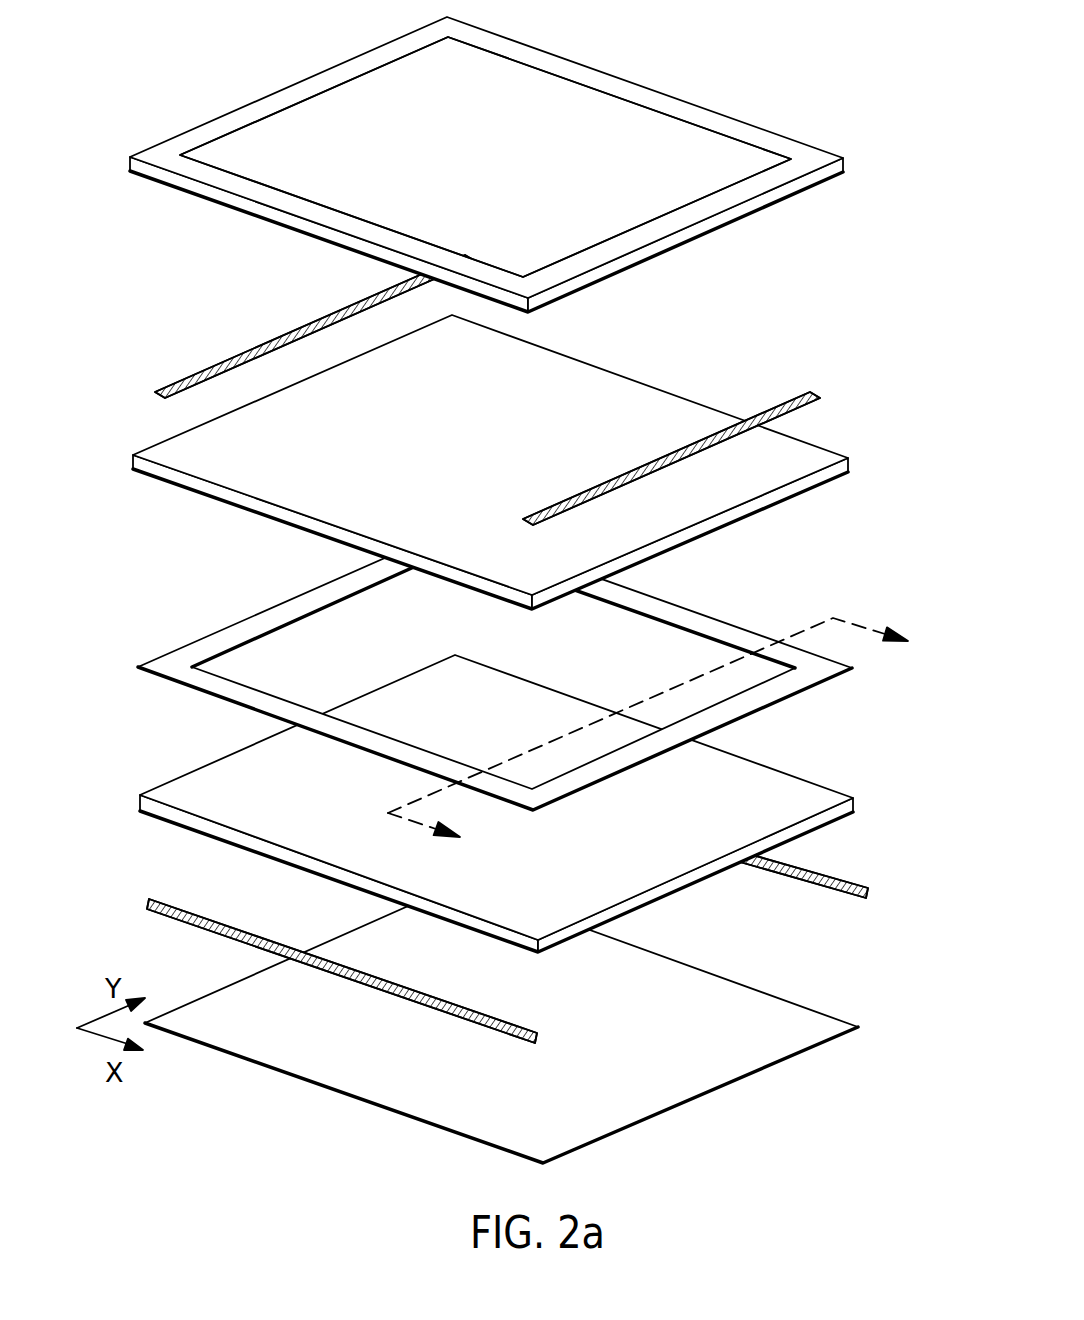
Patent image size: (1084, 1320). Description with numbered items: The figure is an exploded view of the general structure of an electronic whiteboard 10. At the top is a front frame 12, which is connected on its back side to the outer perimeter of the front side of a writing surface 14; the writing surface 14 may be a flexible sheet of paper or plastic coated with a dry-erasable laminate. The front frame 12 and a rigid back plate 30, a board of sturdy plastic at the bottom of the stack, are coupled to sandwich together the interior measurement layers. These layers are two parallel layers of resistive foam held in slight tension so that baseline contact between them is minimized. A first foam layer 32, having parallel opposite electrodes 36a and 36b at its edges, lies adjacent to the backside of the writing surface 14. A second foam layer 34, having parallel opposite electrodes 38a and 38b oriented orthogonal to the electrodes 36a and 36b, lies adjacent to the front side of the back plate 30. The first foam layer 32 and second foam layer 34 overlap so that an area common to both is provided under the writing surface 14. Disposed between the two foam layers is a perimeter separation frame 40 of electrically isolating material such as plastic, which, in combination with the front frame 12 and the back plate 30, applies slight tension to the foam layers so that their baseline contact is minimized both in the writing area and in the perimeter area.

The electronic whiteboard 10 is at (541, 596).
The front frame 12 is at (227, 180).
The writing surface 14 is at (497, 170).
The rigid back plate 30 is at (680, 1077).
The first foam layer 32 is at (349, 460).
The second foam layer 34 is at (334, 833).
The electrode 36a is at (292, 328).
The electrode 36b is at (797, 414).
The electrode 38a is at (837, 895).
The electrode 38b is at (722, 942).
The perimeter separation frame 40 is at (195, 650).